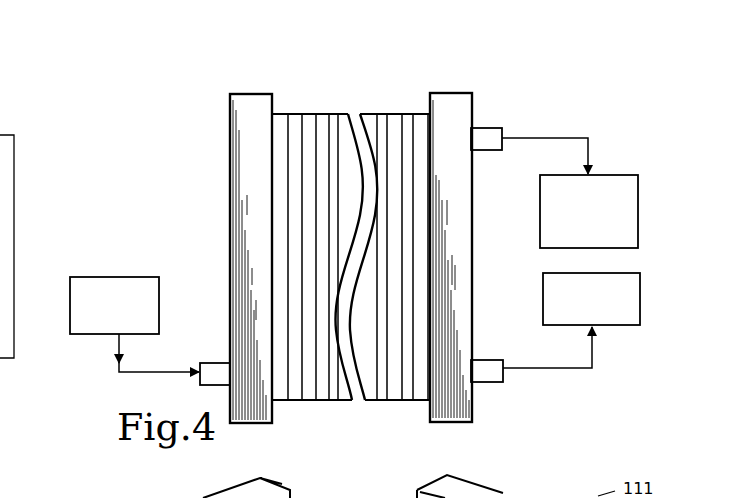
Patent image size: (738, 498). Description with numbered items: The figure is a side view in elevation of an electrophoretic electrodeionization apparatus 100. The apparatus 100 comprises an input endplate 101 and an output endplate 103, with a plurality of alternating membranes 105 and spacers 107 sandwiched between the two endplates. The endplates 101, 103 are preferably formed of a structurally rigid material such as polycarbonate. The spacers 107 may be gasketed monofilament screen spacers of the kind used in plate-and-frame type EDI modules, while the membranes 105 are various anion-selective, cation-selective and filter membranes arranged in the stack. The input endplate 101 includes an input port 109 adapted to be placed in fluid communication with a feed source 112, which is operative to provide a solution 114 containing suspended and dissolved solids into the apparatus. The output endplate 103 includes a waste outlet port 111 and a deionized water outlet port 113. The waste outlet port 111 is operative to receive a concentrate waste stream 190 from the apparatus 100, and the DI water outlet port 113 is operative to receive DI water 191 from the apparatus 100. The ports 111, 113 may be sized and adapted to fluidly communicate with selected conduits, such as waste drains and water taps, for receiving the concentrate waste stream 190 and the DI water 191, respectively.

The electrophoretic electrodeionization apparatus 100 is at (515, 107).
The input endplate 101 is at (242, 103).
The output endplate 103 is at (455, 95).
The membranes 105 is at (404, 113).
The spacers 107 is at (310, 400).
The input port 109 is at (222, 365).
The waste outlet port 111 is at (485, 137).
The feed source 112 is at (110, 277).
The DI water outlet port 113 is at (492, 380).
The solution 114 is at (119, 373).
The concentrate waste stream 190 is at (625, 185).
The DI water 191 is at (623, 285).